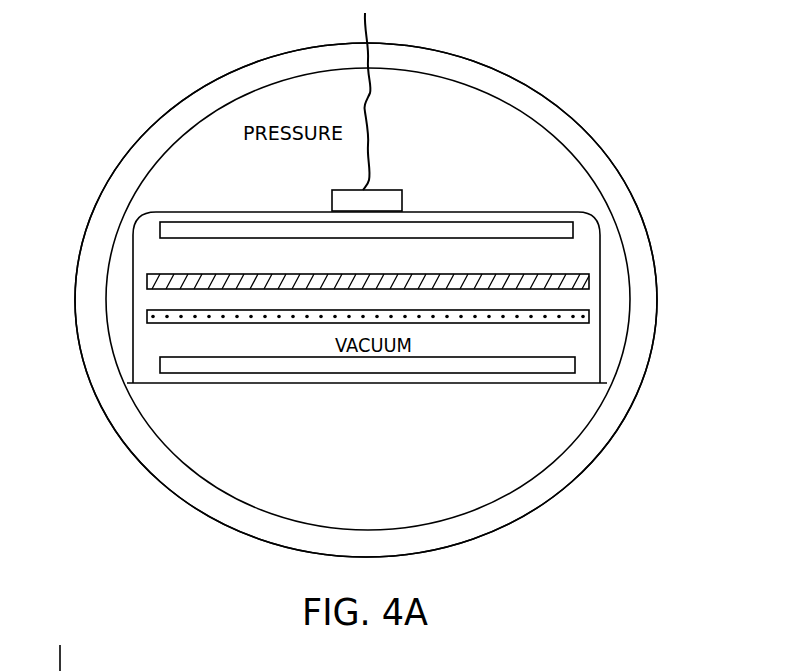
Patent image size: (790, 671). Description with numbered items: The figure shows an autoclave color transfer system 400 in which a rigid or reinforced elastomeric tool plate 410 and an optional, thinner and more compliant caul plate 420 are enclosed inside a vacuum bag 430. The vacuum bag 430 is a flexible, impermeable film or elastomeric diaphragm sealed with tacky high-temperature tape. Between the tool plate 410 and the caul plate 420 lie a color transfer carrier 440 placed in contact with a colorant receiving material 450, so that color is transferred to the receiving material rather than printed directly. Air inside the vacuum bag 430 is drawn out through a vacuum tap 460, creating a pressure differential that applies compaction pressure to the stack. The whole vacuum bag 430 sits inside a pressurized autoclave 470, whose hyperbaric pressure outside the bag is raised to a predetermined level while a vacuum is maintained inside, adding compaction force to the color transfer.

The autoclave color transfer system 400 is at (75, 56).
The tool plate 410 is at (223, 237).
The caul plate 420 is at (225, 356).
The vacuum bag 430 is at (508, 212).
The color transfer carrier 440 is at (513, 273).
The colorant receiving material 450 is at (512, 310).
The vacuum tap 460 is at (370, 93).
The autoclave 470 is at (560, 128).